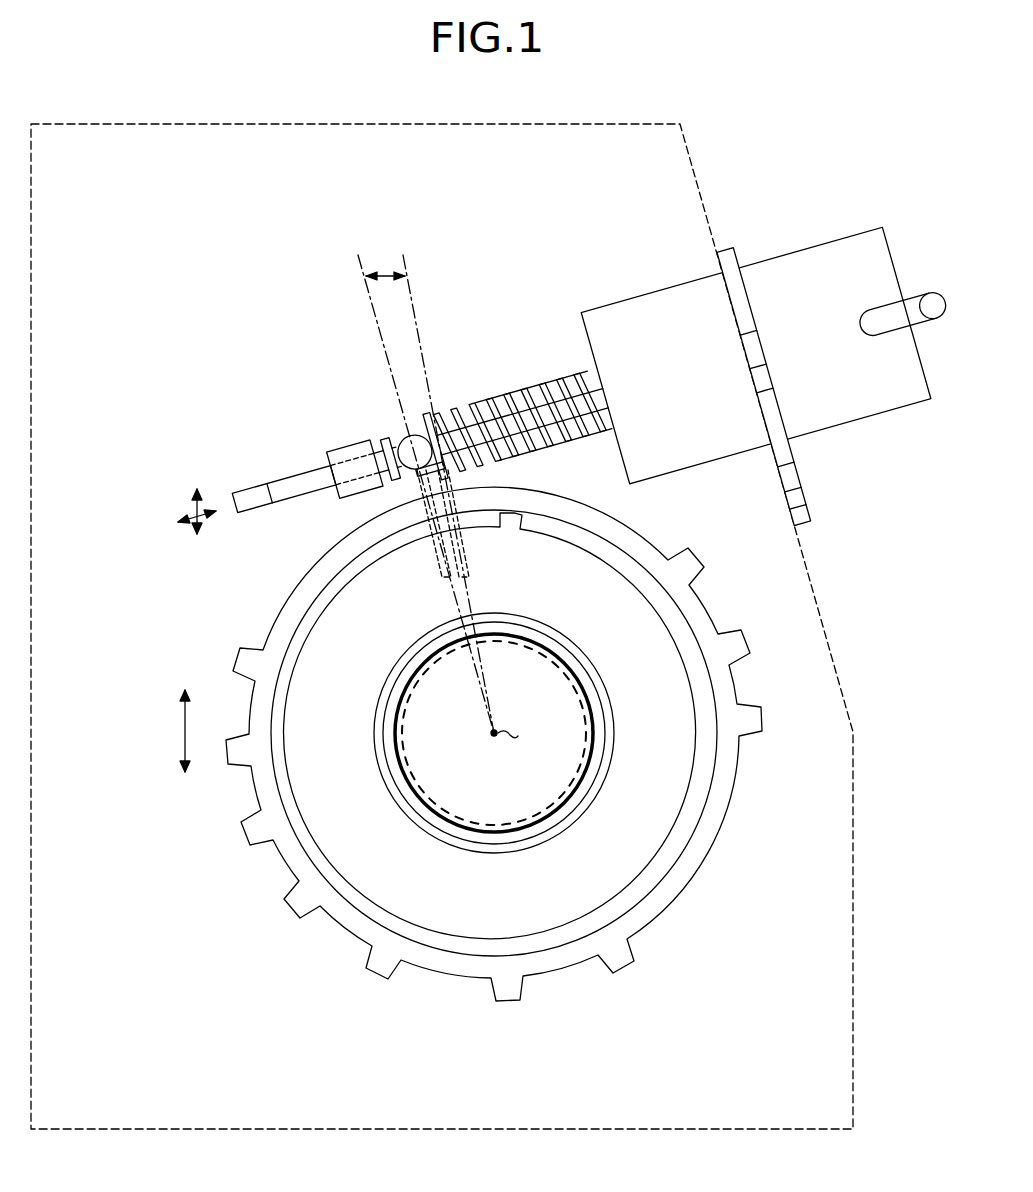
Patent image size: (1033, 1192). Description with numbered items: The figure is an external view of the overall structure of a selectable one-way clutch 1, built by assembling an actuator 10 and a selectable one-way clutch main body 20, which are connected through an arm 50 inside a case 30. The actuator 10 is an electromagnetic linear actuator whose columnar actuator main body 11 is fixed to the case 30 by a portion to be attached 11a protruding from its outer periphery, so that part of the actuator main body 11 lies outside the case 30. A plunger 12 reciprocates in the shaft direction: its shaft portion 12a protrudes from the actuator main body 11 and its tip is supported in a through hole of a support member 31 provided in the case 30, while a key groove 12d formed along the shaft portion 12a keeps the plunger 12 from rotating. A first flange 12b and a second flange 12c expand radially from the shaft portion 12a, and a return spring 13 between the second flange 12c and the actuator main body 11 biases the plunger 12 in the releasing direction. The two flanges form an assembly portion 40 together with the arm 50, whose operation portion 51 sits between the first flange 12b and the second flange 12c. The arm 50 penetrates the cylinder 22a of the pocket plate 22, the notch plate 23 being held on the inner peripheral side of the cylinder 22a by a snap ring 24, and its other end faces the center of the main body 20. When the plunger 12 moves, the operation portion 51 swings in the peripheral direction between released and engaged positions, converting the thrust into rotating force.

The selectable one-way clutch 1 is at (596, 188).
The actuator 10 is at (626, 230).
The actuator main body 11 is at (652, 285).
The portion to be attached 11a is at (728, 247).
The plunger 12 is at (526, 381).
The shaft portion 12a is at (301, 478).
The first flange 12b is at (383, 441).
The second flange 12c is at (432, 430).
The key groove 12d is at (493, 415).
The return spring 13 is at (590, 392).
The selectable one-way clutch main body 20 is at (628, 972).
The pocket plate 22 is at (727, 807).
The cylinder 22a is at (685, 868).
The notch plate 23 is at (678, 772).
The snap ring 24 is at (700, 690).
The case 30 is at (853, 930).
The support member 31 is at (345, 448).
The assembly portion 40 is at (412, 402).
The arm 50 is at (396, 494).
The operation portion 51 is at (405, 443).